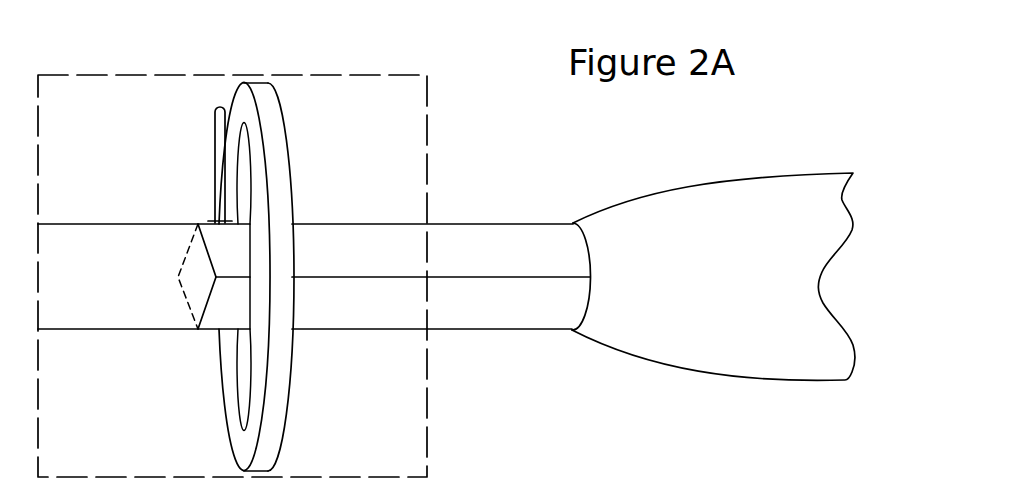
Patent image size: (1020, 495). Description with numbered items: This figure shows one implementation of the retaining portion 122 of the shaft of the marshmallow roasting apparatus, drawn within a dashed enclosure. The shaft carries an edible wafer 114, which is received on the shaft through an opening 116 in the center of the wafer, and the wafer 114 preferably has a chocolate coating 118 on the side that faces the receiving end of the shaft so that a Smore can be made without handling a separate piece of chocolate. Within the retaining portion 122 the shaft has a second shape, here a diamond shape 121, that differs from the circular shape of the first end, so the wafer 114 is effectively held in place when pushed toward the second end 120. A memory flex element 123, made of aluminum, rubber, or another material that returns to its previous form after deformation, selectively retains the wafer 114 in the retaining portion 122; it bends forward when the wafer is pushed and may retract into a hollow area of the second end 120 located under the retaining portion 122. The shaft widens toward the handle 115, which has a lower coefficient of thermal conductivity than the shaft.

The retaining portion 122 is at (132, 73).
The memory flex element 123 is at (215, 131).
The diamond shape 121 is at (185, 266).
The edible wafer 114 is at (281, 154).
The opening 116 is at (240, 336).
The chocolate coating 118 is at (243, 413).
The second end 120 is at (713, 265).
The handle 115 is at (738, 348).